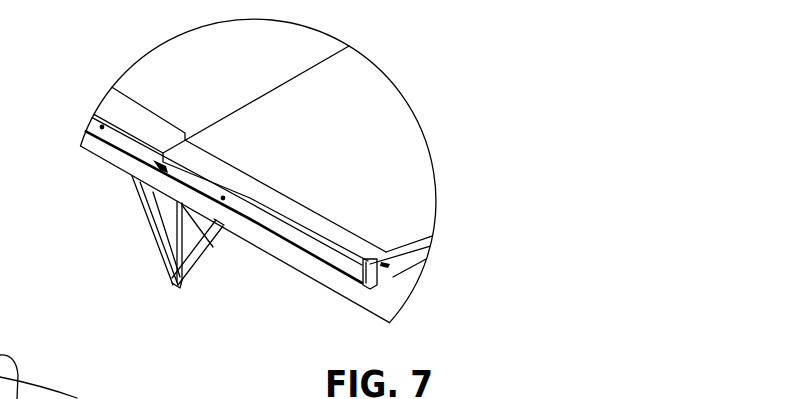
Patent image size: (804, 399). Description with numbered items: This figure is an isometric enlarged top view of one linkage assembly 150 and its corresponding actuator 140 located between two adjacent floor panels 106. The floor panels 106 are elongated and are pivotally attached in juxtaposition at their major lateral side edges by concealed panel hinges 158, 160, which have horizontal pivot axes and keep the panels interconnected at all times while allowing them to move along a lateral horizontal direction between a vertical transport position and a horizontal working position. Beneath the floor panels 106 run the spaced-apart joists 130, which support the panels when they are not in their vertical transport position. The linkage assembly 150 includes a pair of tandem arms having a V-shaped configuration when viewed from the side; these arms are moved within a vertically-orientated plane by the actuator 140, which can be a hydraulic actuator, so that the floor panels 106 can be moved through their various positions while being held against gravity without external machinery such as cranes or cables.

The floor panel 106 is at (150, 63).
The joist 130 is at (303, 263).
The actuator 140 is at (210, 242).
The linkage assembly 150 is at (115, 228).
The panel hinge 158 is at (77, 398).
The panel hinge 160 is at (390, 236).